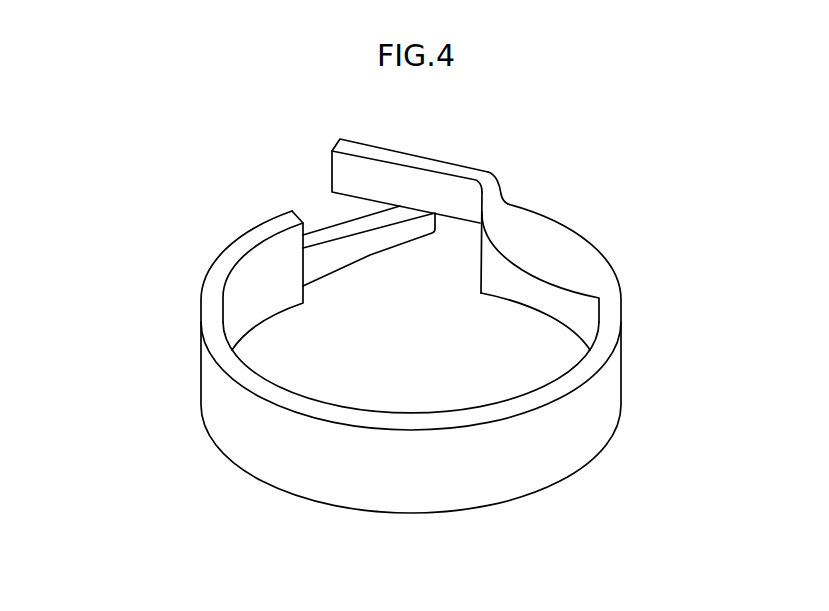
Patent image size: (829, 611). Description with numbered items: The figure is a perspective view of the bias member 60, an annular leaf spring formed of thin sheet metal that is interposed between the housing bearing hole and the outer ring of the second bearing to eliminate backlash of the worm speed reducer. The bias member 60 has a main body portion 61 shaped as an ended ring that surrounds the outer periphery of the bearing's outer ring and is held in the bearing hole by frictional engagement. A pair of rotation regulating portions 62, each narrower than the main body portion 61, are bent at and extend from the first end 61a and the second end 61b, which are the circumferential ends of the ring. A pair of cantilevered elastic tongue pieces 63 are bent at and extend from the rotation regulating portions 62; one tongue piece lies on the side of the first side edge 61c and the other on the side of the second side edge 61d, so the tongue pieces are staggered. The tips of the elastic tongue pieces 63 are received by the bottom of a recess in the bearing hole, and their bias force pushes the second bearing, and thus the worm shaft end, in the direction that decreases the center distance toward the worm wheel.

The bias member 60 is at (515, 142).
The main body portion 61 is at (383, 491).
The first end 61a is at (566, 290).
The second end 61b is at (253, 284).
The first side edge 61c is at (210, 303).
The second side edge 61d is at (534, 312).
The rotation regulating portion 62 is at (497, 193).
The elastic tongue piece 63 is at (447, 166).